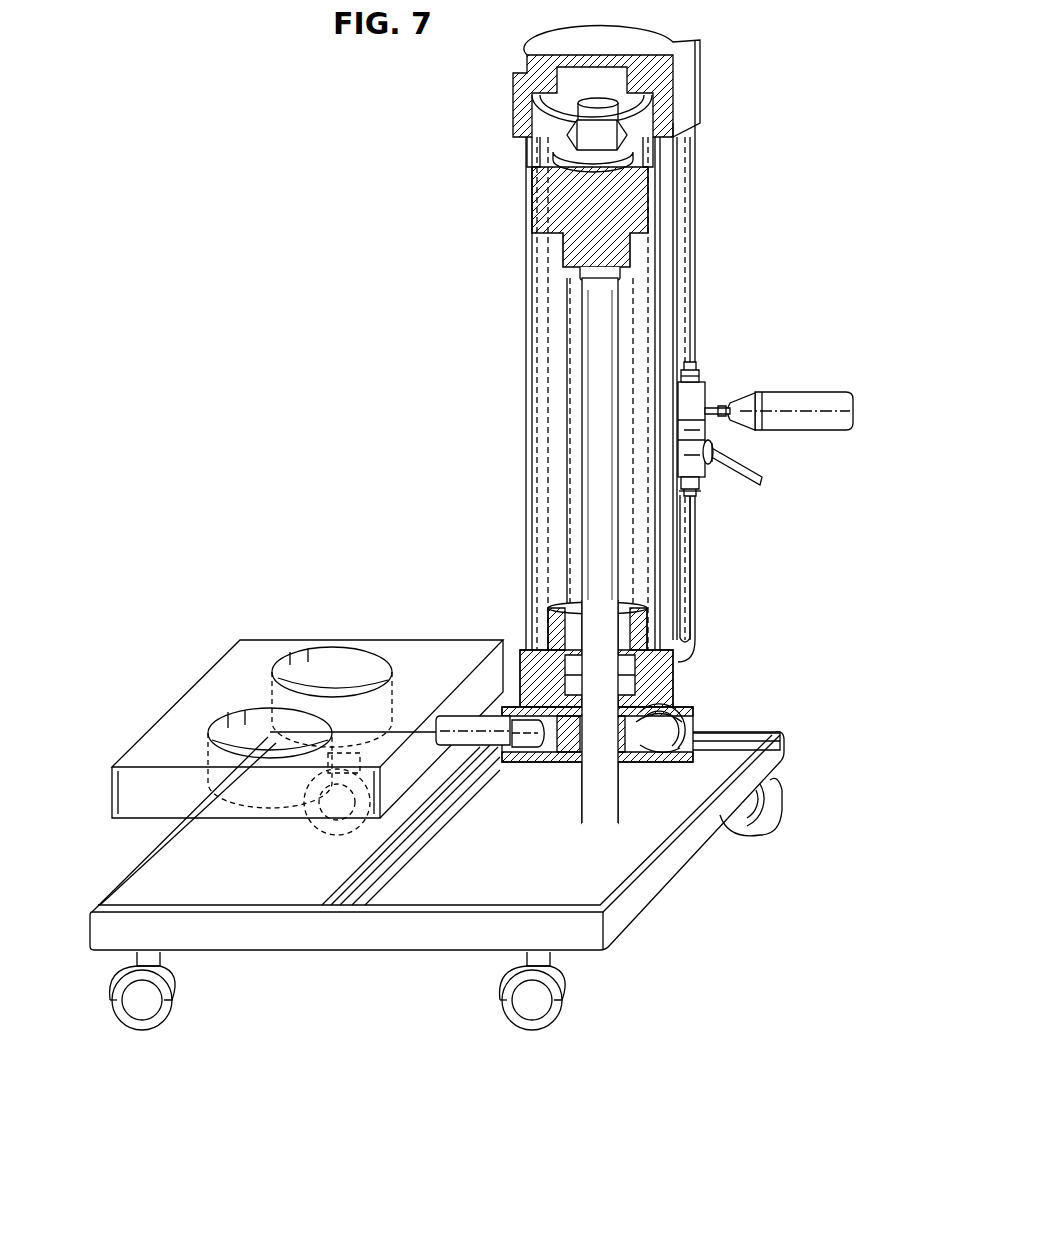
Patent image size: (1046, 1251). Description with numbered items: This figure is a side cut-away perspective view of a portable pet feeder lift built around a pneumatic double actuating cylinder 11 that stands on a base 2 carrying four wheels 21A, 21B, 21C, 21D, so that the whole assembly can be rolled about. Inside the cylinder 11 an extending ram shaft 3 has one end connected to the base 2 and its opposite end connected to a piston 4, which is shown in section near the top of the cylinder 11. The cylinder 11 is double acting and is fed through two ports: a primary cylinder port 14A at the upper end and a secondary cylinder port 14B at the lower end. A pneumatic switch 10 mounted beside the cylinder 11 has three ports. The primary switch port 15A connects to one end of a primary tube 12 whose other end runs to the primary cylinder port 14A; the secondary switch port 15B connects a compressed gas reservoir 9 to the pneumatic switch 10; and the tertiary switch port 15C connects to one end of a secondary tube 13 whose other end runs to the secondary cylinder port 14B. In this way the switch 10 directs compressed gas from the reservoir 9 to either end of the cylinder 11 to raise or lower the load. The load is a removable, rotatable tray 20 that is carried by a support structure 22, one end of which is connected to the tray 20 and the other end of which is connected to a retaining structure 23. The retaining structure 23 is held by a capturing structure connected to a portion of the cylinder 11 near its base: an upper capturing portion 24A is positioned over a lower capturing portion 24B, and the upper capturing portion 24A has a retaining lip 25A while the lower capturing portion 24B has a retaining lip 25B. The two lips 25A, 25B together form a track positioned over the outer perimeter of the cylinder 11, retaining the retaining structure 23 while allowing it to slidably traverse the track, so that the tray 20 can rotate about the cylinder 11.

The base 2 is at (307, 952).
The ram shaft 3 is at (583, 815).
The piston 4 is at (540, 202).
The compressed gas reservoir 9 is at (803, 394).
The pneumatic switch 10 is at (762, 480).
The pneumatic double actuating cylinder 11 is at (530, 398).
The primary tube 12 is at (690, 232).
The secondary tube 13 is at (692, 553).
The primary cylinder port 14A is at (702, 105).
The secondary cylinder port 14B is at (682, 670).
The primary switch port 15A is at (696, 378).
The secondary switch port 15B is at (709, 414).
The tertiary switch port 15C is at (708, 460).
The rotatable tray 20 is at (112, 790).
The wheel 21A is at (147, 1030).
The wheel 21B is at (322, 830).
The wheel 21C is at (745, 832).
The wheel 21D is at (537, 1030).
The support structure 22 is at (479, 752).
The retaining structure 23 is at (530, 748).
The upper capturing portion 24A is at (702, 714).
The lower capturing portion 24B is at (706, 743).
The retaining lip 25A is at (677, 716).
The retaining lip 25B is at (661, 750).